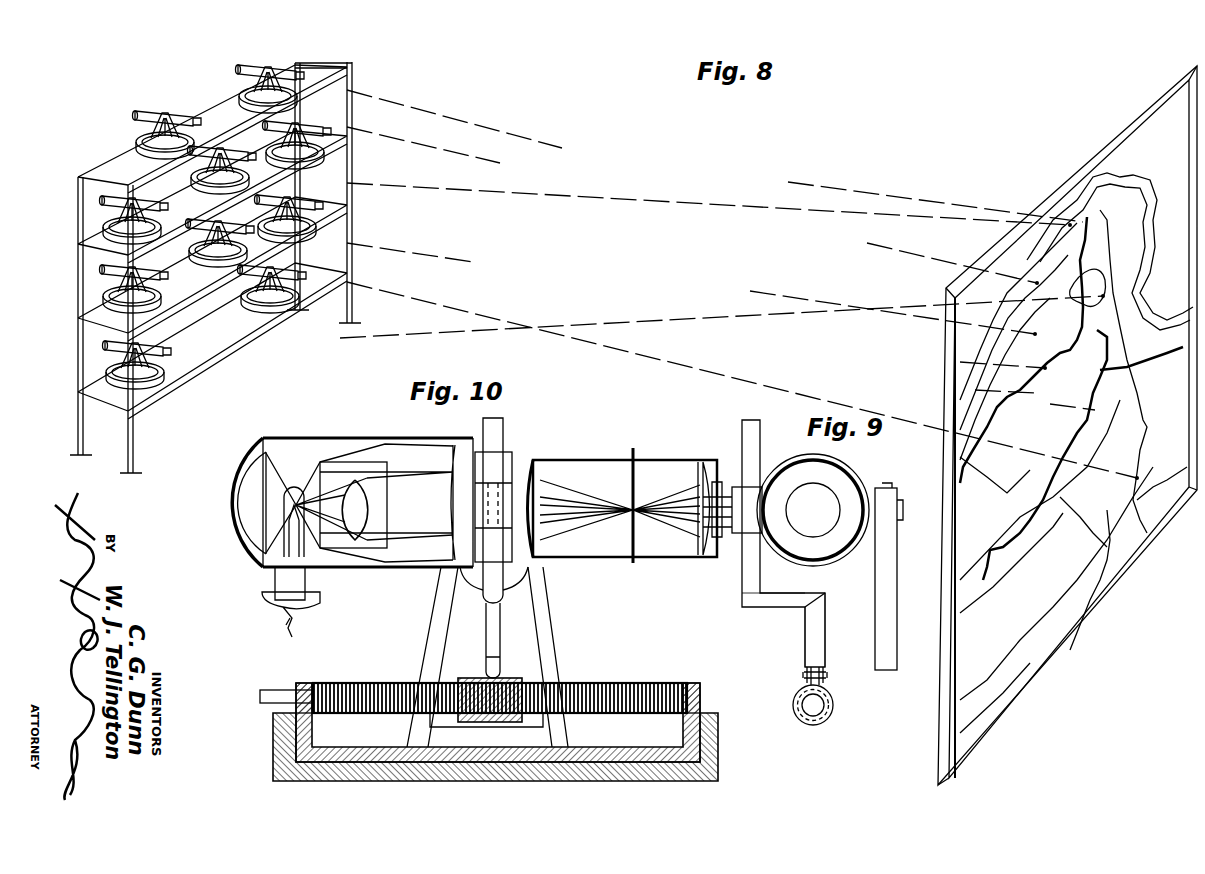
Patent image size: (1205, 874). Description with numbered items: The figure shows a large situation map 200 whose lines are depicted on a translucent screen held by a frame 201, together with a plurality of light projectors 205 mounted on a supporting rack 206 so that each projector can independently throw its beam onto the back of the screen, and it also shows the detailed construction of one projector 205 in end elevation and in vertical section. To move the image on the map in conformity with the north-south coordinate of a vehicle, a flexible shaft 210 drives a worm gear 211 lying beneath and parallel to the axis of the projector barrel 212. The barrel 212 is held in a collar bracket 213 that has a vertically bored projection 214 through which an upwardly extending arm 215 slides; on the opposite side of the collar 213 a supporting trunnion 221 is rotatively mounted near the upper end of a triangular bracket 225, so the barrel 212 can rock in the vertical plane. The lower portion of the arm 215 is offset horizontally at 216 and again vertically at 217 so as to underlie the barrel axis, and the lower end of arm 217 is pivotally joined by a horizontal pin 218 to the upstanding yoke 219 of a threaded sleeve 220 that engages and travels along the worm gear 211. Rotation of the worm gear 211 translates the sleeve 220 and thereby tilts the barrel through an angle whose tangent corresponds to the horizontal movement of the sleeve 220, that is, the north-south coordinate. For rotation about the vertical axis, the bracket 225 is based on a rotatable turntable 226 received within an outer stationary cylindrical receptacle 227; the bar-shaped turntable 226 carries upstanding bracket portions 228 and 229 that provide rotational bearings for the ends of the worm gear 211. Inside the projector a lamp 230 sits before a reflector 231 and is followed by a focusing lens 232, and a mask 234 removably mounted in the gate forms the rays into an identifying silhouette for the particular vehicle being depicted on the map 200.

In FIG. 8, the situation map 200 is at (1133, 172).
In FIG. 8, the frame 201 is at (1135, 118).
In FIG. 8, the light projector 205 is at (347, 244).
In FIG. 8, the supporting rack 206 is at (347, 100).
In FIG. 10, the flexible shaft 210 is at (276, 690).
In FIG. 10, the worm gear 211 is at (360, 684).
In FIG. 10, the projector barrel 212 is at (548, 458).
In FIG. 9, the collar bracket 213 is at (843, 466).
In FIG. 9, the vertically bored projection 214 is at (748, 522).
In FIG. 10, the upwardly extending arm 215 is at (493, 548).
In FIG. 9, the upwardly extending arm 215 is at (750, 409).
In FIG. 9, the horizontal offset 216 is at (756, 607).
In FIG. 9, the vertical offset arm 217 is at (821, 611).
In FIG. 9, the horizontal pin 218 is at (822, 675).
In FIG. 9, the upstanding yoke 219 is at (822, 682).
In FIG. 10, the threaded sleeve 220 is at (506, 679).
In FIG. 9, the threaded sleeve 220 is at (834, 707).
In FIG. 9, the supporting trunnion 221 is at (900, 508).
In FIG. 10, the triangular bracket 225 is at (545, 606).
In FIG. 10, the rotatable turntable 226 is at (705, 716).
In FIG. 10, the stationary cylindrical receptacle 227 is at (716, 765).
In FIG. 10, the upstanding bracket portion 228 is at (302, 683).
In FIG. 10, the upstanding bracket portion 229 is at (686, 684).
In FIG. 10, the lamp 230 is at (297, 496).
In FIG. 10, the reflector 231 is at (245, 513).
In FIG. 10, the focusing lens 232 is at (366, 510).
In FIG. 10, the mask 234 is at (640, 465).